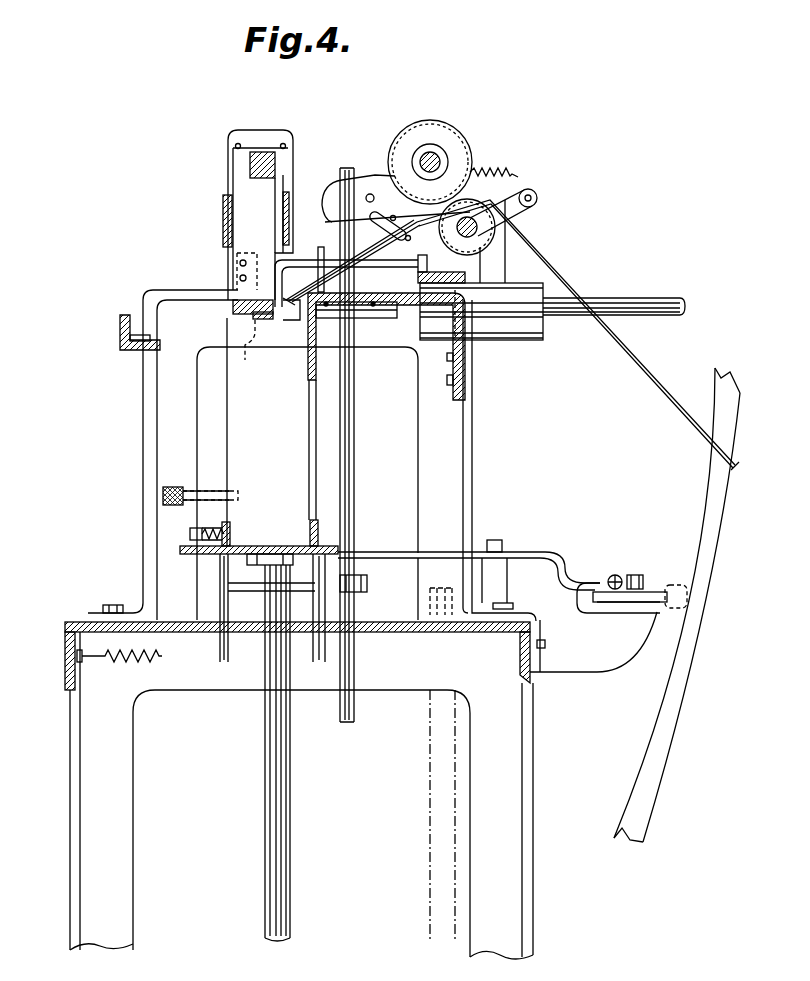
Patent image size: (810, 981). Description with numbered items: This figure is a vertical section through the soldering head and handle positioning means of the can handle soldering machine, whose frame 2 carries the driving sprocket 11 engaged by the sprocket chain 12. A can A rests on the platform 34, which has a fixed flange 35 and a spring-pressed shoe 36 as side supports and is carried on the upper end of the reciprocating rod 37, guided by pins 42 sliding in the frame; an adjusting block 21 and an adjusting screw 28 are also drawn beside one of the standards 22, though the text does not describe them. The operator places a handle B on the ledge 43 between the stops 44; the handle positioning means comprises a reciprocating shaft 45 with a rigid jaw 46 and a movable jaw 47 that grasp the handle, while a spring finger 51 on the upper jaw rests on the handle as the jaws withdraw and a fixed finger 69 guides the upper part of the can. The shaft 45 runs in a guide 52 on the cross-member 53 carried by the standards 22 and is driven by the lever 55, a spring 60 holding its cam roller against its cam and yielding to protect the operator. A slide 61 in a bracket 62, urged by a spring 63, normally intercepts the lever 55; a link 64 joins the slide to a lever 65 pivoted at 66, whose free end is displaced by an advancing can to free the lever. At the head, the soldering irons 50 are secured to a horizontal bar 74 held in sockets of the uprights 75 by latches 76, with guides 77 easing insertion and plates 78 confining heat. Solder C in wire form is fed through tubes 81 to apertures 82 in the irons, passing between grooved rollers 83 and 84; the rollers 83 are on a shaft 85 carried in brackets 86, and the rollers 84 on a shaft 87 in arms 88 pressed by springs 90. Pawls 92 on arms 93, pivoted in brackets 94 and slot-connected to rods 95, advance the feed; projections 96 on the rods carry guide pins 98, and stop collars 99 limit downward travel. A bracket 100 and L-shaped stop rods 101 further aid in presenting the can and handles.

The frame 2 is at (68, 763).
The driving sprocket 11 is at (440, 591).
The sprocket chain 12 is at (430, 790).
The adjusting block 21 is at (165, 500).
The standards 22 is at (144, 468).
The adjusting screw 28 is at (215, 491).
The platform 34 is at (290, 546).
The fixed flange 35 is at (320, 526).
The spring-pressed shoe 36 is at (234, 528).
The reciprocating bar or rod 37 is at (292, 778).
The pins 42 is at (222, 648).
The ledge 43 is at (128, 352).
The stops 44 is at (120, 338).
The reciprocating shaft 45 is at (645, 300).
The rigid jaw 46 is at (370, 318).
The movable jaw 47 is at (288, 322).
The soldering irons 50 is at (242, 244).
The spring finger 51 is at (232, 312).
The guide 52 is at (530, 336).
The cross-member 53 is at (463, 275).
The lever 55 is at (686, 505).
The spring 60 is at (132, 668).
The slide 61 is at (620, 604).
The bracket 62 is at (593, 642).
The spring 63 is at (615, 573).
The link 64 is at (648, 580).
The lever 65 is at (440, 552).
The pivot 66 is at (500, 544).
The fixed finger 69 is at (232, 318).
The horizontal bar 74 is at (250, 165).
The uprights 75 is at (285, 178).
The latches 76 is at (261, 147).
The guides 77 is at (239, 131).
The plates 78 is at (282, 208).
The tubes 81 is at (380, 263).
The apertures 82 is at (250, 353).
The grooved feeding rollers 83 is at (458, 145).
The grooved feeding rollers 84 is at (496, 230).
The shaft 85 is at (432, 155).
The brackets 86 is at (468, 288).
The shaft 87 is at (478, 235).
The arms 88 is at (537, 208).
The springs 90 is at (500, 176).
The spring-pressed pawls 92 is at (379, 183).
The arms 93 is at (318, 213).
The brackets 94 is at (505, 278).
The rods 95 is at (355, 408).
The projections 96 is at (322, 450).
The guide pins 98 is at (320, 250).
The stop collars 99 is at (367, 584).
The bracket 100 is at (312, 355).
The L-shaped stop rods 101 is at (262, 290).
The can A is at (227, 420).
The handle B is at (264, 339).
The solder C is at (635, 350).